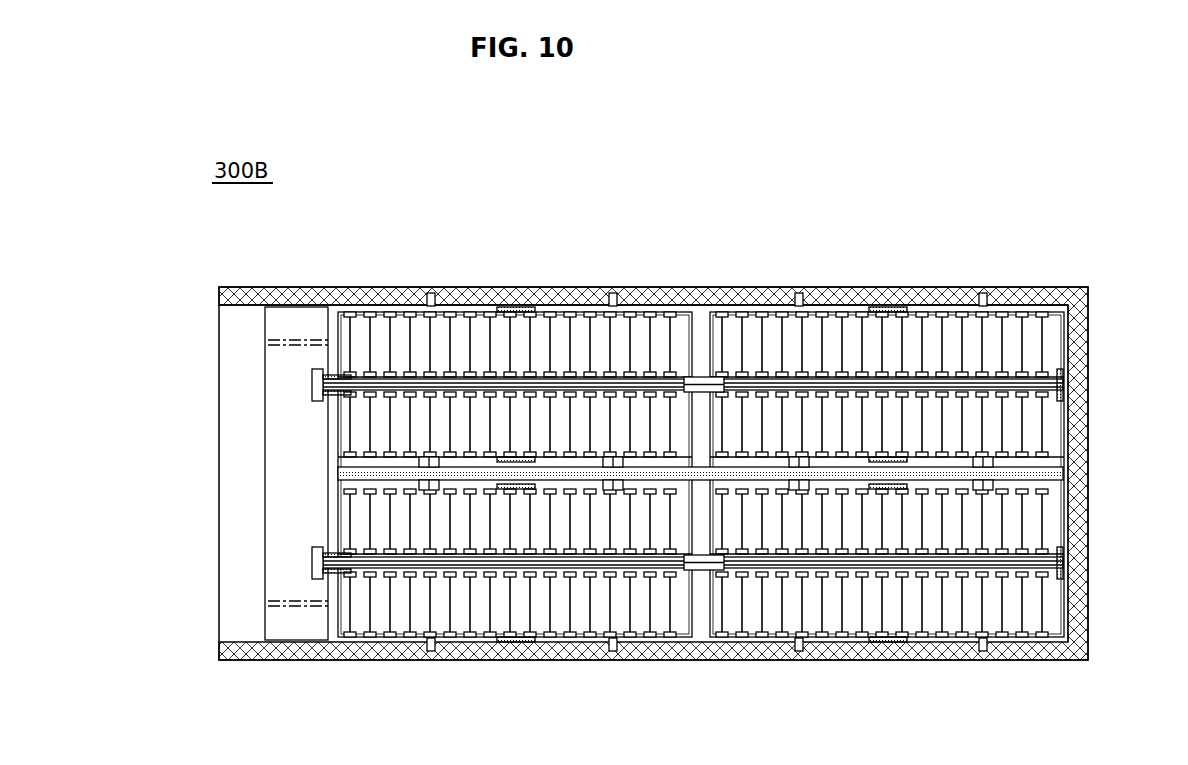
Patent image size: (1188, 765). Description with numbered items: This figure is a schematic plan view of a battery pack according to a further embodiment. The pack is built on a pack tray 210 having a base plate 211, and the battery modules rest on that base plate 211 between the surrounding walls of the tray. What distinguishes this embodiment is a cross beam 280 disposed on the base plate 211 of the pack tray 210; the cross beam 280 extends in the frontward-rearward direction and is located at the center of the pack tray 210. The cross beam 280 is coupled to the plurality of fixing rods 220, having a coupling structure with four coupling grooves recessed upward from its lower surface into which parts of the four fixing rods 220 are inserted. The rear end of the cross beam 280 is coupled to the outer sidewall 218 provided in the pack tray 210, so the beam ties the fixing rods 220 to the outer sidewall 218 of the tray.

The pack tray 210 is at (1017, 235).
The base plate 211 is at (234, 376).
The outer sidewall 218 is at (1077, 513).
The fixing rods 220 is at (612, 294).
The cross beam 280 is at (1062, 471).